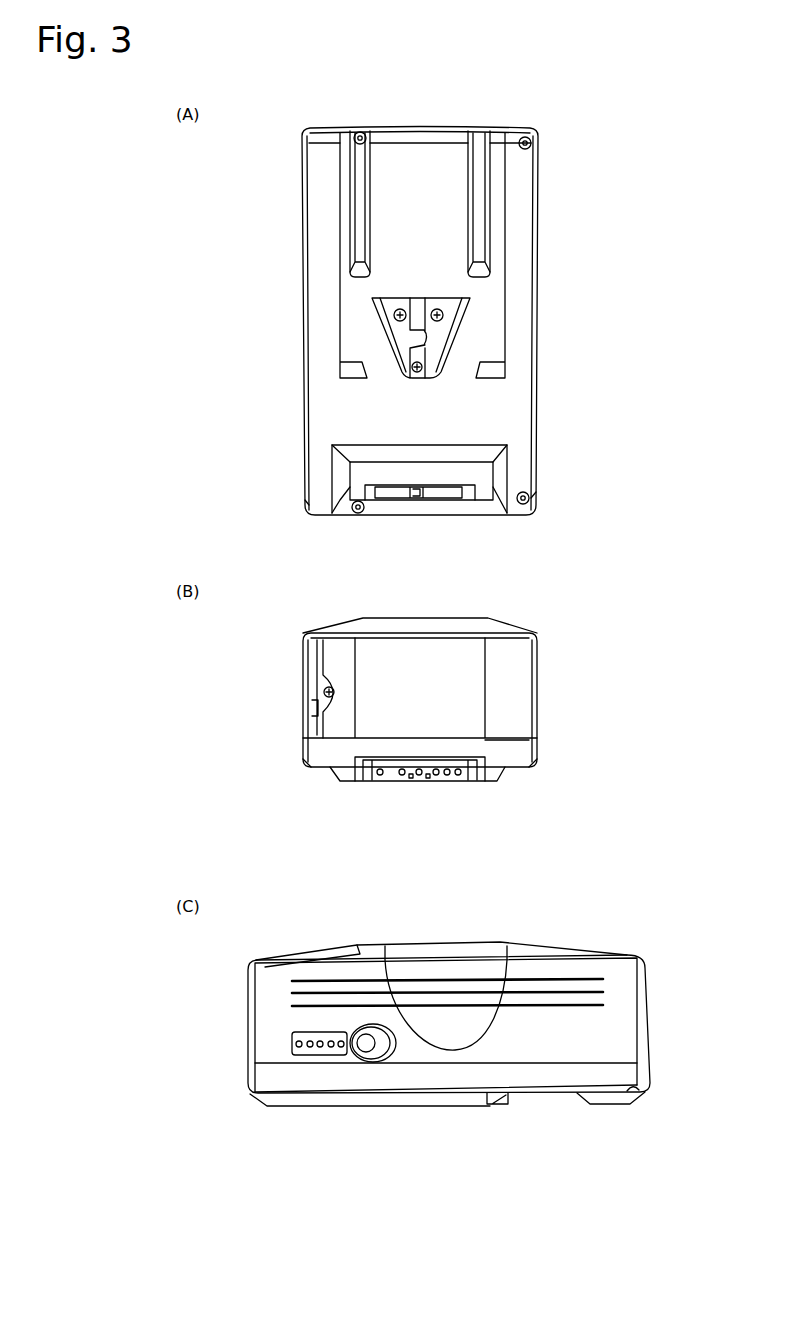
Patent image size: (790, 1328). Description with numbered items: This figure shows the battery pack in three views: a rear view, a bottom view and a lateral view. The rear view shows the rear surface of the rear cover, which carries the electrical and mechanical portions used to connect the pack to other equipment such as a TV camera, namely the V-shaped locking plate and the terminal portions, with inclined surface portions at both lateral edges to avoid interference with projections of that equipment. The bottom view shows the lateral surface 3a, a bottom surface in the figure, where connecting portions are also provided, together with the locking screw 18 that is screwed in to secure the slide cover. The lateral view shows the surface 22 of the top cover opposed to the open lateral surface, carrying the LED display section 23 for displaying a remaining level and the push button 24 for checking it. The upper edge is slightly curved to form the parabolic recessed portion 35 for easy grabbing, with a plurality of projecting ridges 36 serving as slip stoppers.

The lateral surface 3a is at (510, 758).
The locking screw 18 is at (322, 693).
The surface 22 is at (616, 988).
The LED display section 23 is at (315, 1062).
The push button 24 is at (379, 1052).
The recessed portion 35 is at (456, 958).
The projecting ridges 36 is at (338, 981).